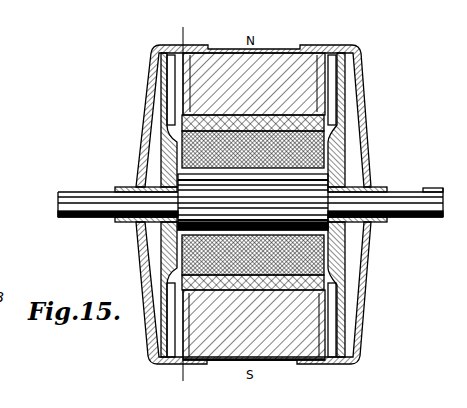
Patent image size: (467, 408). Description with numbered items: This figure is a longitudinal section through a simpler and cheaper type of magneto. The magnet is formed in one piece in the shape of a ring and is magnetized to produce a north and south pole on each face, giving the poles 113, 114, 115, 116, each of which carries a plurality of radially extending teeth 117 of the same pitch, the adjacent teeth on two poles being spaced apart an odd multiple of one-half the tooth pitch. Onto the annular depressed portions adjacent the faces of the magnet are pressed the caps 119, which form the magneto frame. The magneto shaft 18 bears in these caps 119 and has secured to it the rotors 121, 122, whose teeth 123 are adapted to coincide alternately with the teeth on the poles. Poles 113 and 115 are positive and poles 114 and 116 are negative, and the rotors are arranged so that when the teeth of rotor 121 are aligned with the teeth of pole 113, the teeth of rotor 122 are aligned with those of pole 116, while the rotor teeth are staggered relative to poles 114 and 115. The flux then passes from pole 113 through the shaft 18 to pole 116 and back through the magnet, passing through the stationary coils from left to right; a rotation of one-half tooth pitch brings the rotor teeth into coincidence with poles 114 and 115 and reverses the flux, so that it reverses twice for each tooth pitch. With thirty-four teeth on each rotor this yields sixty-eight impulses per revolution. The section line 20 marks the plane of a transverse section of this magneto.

The magneto shaft 18 is at (89, 219).
The section line 20- 20 is at (183, 372).
The pole 113 is at (190, 63).
The pole 114 is at (192, 336).
The pole 115 is at (314, 82).
The pole 116 is at (309, 319).
The radially extending teeth 117 is at (181, 86).
The caps 119 is at (140, 155).
The rotor 121 is at (163, 132).
The rotor 122 is at (347, 112).
The teeth 123 is at (175, 107).